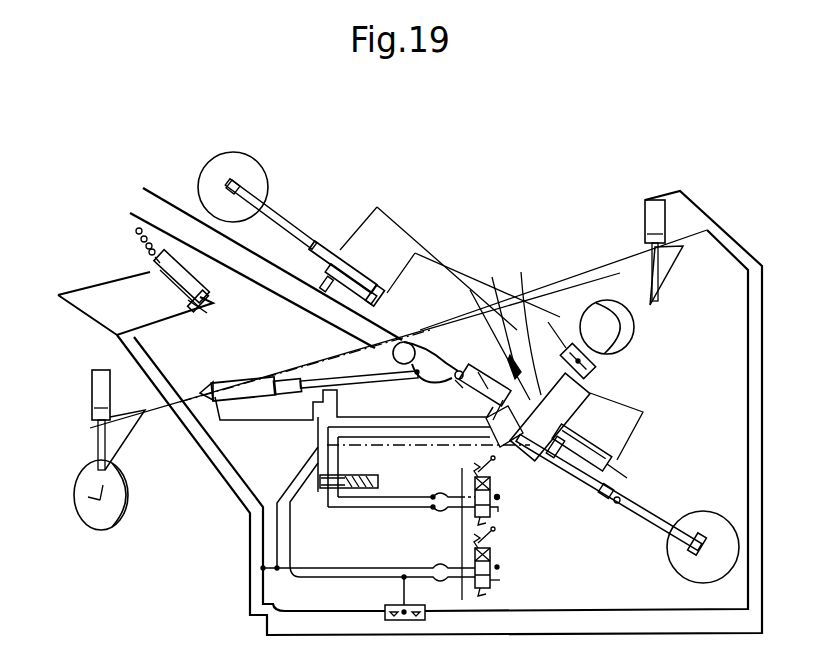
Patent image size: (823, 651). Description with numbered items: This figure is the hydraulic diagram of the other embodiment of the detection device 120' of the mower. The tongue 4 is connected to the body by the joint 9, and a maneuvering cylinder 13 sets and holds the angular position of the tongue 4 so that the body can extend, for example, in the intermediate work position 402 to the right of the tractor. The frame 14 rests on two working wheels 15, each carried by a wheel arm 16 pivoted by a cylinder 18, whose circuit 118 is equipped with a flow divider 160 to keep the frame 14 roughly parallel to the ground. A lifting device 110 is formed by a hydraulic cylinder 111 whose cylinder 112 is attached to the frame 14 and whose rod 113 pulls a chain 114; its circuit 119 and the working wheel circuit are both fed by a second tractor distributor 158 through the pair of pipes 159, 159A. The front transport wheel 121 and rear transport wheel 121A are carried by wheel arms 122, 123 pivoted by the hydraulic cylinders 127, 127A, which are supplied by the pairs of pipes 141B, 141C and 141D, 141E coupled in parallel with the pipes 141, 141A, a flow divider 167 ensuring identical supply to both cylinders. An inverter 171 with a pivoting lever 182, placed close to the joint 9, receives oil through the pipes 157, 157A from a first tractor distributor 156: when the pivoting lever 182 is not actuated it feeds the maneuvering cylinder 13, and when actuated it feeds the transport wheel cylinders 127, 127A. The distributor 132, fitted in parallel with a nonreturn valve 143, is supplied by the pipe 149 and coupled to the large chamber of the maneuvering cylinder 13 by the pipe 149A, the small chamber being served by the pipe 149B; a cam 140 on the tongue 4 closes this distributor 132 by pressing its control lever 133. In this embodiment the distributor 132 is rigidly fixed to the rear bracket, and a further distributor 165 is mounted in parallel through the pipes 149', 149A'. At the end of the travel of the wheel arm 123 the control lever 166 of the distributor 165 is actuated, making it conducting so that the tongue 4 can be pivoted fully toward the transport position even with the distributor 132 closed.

The tongue 4 is at (174, 195).
The intermediate work position 402 is at (261, 232).
The joint 9 is at (372, 350).
The maneuvering cylinder 13 is at (252, 385).
The frame 14 is at (612, 256).
The working wheels 15 is at (128, 508).
The wheel arm 16 is at (122, 455).
The cylinders 18 is at (92, 378).
The lifting device 110 is at (150, 300).
The hydraulic cylinder 111 is at (207, 312).
The cylinder 112 is at (207, 298).
The rod 113 is at (145, 253).
The chain 114 is at (137, 233).
The circuit 118 is at (230, 575).
The circuit 119 is at (102, 352).
The detection device 120' is at (493, 312).
The front transport wheel 121 is at (265, 172).
The rear transport wheel 121A is at (705, 512).
The wheel arm 122 is at (287, 209).
The wheel arm 123 is at (663, 502).
The hydraulic cylinder 127 is at (354, 272).
The hydraulic cylinder 127A is at (594, 452).
The distributor 132 is at (448, 393).
The control lever 133 is at (458, 369).
The cam 140 is at (415, 333).
The pipe 141 is at (533, 315).
The pipe 141A is at (518, 345).
The pipe 141B is at (416, 252).
The pipe 141C is at (380, 207).
The pipe 141D is at (608, 405).
The pipe 141E is at (646, 431).
The nonreturn valve 143 is at (500, 390).
The pipe 149 is at (372, 446).
The pipe 149A is at (284, 496).
The pipe 149B is at (294, 513).
The pipe 149' is at (515, 490).
The pipe 149A' is at (525, 507).
The first distributor 156 is at (502, 548).
The pipe 157 is at (418, 495).
The pipe 157A is at (380, 508).
The second distributor 158 is at (508, 584).
The pipe 159 is at (372, 568).
The pipe 159A is at (332, 580).
The flow divider 160 is at (388, 607).
The distributor 165 is at (588, 514).
The control lever 166 is at (614, 507).
The flow divider 167 is at (598, 369).
The inverter 171 is at (316, 496).
The pivoting lever 182 is at (388, 471).